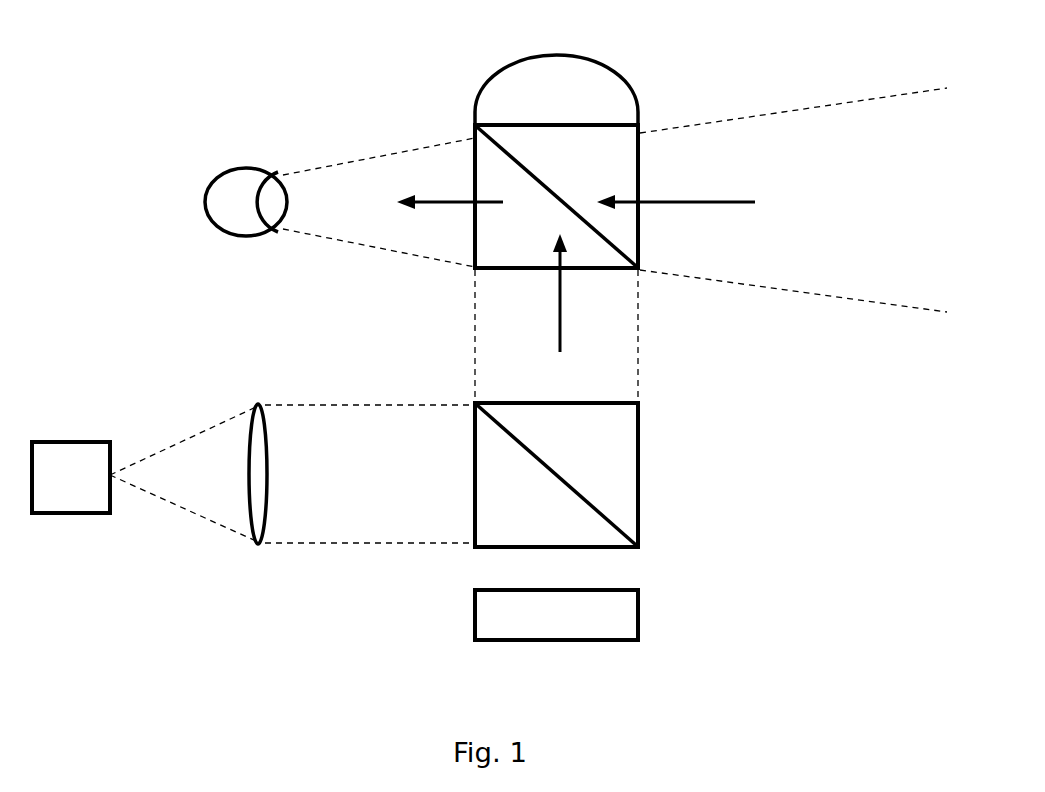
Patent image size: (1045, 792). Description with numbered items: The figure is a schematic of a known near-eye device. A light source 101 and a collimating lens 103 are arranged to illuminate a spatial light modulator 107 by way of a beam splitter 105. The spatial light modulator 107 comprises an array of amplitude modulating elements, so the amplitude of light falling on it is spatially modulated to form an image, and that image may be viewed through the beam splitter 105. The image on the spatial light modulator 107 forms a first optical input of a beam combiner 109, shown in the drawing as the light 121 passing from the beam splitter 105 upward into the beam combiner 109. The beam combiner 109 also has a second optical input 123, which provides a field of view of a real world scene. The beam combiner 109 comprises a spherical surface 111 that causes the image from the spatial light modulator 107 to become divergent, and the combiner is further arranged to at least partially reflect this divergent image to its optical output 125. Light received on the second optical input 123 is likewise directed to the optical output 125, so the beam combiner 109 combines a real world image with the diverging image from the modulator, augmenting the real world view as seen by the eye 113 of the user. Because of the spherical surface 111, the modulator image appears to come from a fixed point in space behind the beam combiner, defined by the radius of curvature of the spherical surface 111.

The light source 101 is at (58, 514).
The collimating lens 103 is at (262, 547).
The beam splitter 105 is at (640, 478).
The spatial light modulator 107 is at (640, 613).
The beam combiner 109 is at (640, 165).
The spherical surface 111 is at (600, 62).
The eye of user 113 is at (235, 163).
The light beam from first beam splitter 121 is at (587, 294).
The second optical input 123 is at (704, 200).
The optical output 125 is at (448, 186).